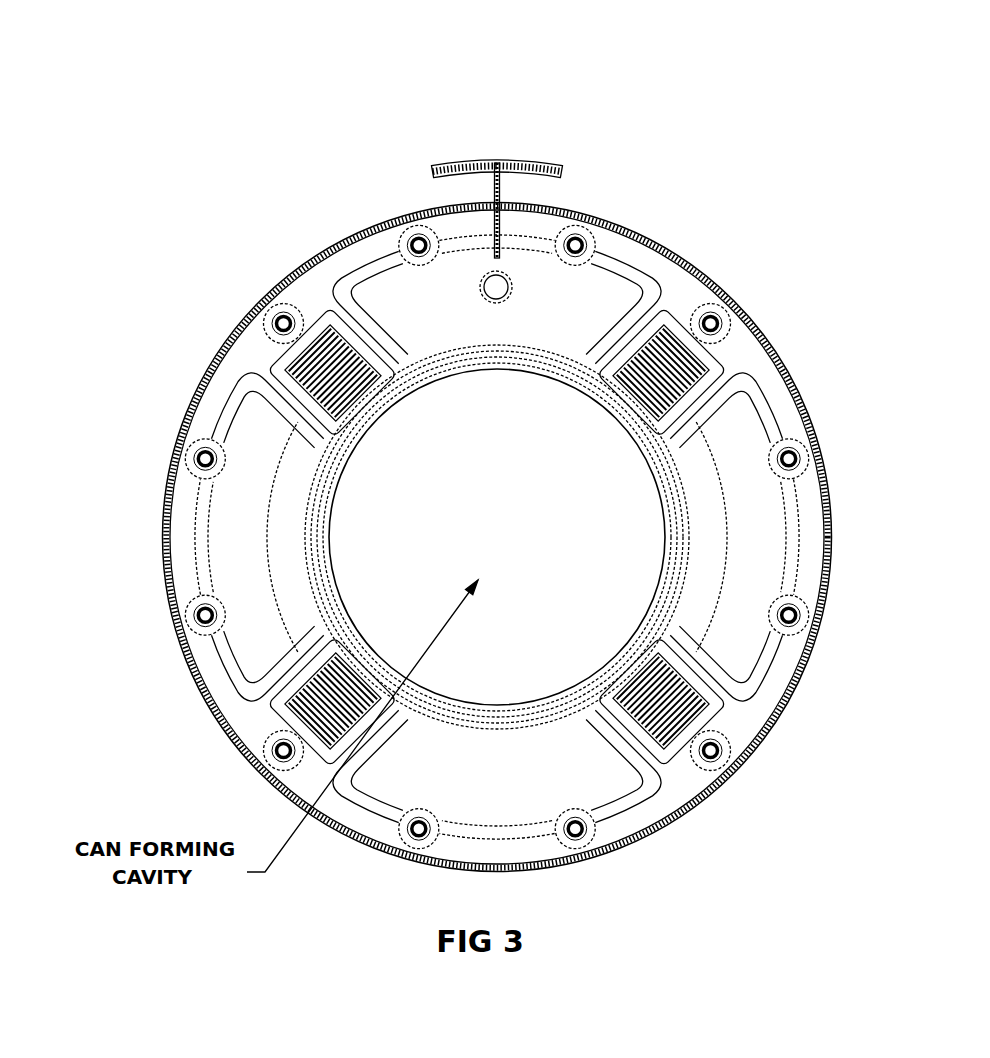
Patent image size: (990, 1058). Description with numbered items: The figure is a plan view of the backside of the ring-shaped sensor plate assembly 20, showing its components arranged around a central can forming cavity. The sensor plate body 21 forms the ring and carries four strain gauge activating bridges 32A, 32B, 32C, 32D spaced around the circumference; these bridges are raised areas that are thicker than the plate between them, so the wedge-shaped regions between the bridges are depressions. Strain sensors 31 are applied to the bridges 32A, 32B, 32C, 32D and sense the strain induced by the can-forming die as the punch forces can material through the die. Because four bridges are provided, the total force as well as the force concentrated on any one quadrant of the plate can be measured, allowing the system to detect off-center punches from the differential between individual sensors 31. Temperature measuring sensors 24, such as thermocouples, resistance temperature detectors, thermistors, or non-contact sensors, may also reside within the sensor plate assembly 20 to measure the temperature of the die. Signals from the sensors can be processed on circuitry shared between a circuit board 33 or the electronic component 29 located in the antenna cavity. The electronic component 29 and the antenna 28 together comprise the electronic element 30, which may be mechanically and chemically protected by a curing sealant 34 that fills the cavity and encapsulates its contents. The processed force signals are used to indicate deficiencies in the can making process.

The sensor plate assembly 20 is at (813, 273).
The sensor plate body 21 is at (678, 289).
The temperature measuring sensors 24 is at (506, 282).
The antenna 28 is at (538, 160).
The electronic component 29 is at (500, 158).
The electronic element 30 is at (510, 149).
The strain sensors 31 is at (693, 353).
The strain gauge activating bridge 32A is at (707, 399).
The strain gauge activating bridge 32B is at (722, 681).
The strain gauge activating bridge 32C is at (277, 680).
The strain gauge activating bridge 32D is at (288, 398).
The circuit board 33 is at (431, 309).
The curing sealant 34 is at (467, 155).